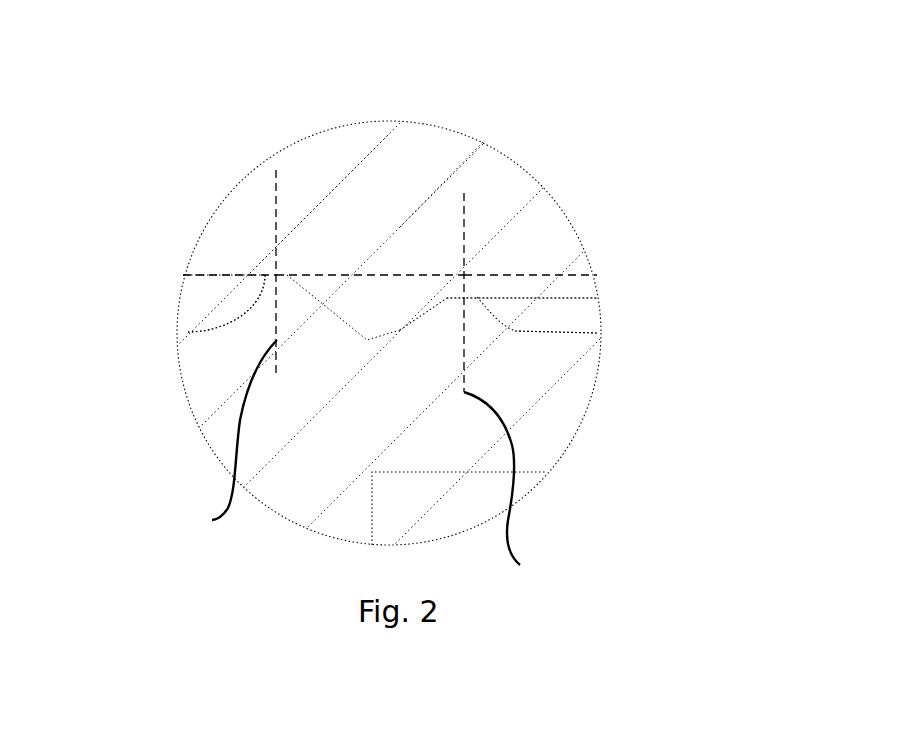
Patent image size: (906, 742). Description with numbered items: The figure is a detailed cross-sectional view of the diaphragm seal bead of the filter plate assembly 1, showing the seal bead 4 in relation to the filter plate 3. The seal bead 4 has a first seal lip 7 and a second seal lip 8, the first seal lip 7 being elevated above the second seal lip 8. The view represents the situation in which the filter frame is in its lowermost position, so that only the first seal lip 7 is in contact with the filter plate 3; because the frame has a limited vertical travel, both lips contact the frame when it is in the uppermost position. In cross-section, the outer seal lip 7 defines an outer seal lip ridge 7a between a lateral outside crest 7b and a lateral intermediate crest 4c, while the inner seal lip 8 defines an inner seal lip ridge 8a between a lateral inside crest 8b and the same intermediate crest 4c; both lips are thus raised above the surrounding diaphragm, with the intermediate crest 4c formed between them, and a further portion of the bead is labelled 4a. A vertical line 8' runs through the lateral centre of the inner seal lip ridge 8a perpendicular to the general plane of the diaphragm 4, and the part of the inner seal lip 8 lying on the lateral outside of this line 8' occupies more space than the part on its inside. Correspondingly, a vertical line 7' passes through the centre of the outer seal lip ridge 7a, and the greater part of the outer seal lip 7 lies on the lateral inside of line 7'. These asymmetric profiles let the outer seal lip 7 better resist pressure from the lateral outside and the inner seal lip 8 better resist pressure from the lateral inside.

The filter plate assembly 1 is at (54, 0).
The filter plate 3 is at (497, 197).
The seal bead 4 is at (590, 407).
The body portion 4a is at (435, 228).
The lateral intermediate crest 4c is at (392, 330).
The first seal lip 7 is at (146, 268).
The outer seal lip ridge 7a is at (267, 275).
The lateral outside crest 7b is at (185, 330).
The vertical line 7' is at (230, 362).
The second seal lip 8 is at (600, 304).
The inner seal lip ridge 8a is at (477, 297).
The lateral inside crest 8b is at (547, 333).
The vertical line 8' is at (463, 391).